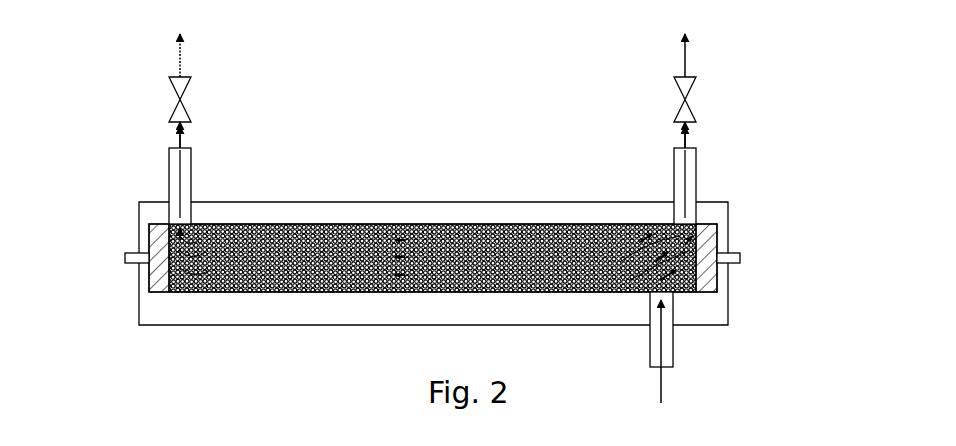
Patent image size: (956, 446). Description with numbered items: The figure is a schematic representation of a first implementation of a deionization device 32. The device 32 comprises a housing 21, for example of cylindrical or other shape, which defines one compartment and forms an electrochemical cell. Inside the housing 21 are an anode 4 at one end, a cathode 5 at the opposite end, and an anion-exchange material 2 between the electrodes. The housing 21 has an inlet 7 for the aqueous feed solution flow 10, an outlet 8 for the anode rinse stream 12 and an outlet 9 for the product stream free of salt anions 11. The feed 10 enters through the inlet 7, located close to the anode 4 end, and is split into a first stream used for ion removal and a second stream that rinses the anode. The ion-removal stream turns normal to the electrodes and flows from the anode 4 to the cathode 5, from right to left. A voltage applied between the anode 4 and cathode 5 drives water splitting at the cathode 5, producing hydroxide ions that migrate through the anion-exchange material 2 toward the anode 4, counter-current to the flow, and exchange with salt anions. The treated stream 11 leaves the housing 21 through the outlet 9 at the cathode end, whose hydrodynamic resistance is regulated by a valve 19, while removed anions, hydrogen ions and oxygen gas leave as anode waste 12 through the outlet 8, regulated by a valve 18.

The anion-exchange material 2 is at (433, 258).
The anode 4 is at (732, 257).
The cathode 5 is at (158, 240).
The inlet 7 is at (650, 354).
The outlet for anode rinse stream 8 is at (696, 175).
The outlet for product stream 9 is at (169, 183).
The aqueous feed solution flow 10 is at (662, 418).
The product stream free of salt anions 11 is at (181, 22).
The anode rinse stream 12 is at (686, 22).
The valve 18 is at (692, 90).
The valve 19 is at (184, 98).
The housing 21 is at (356, 312).
The deionization device 32 is at (532, 140).